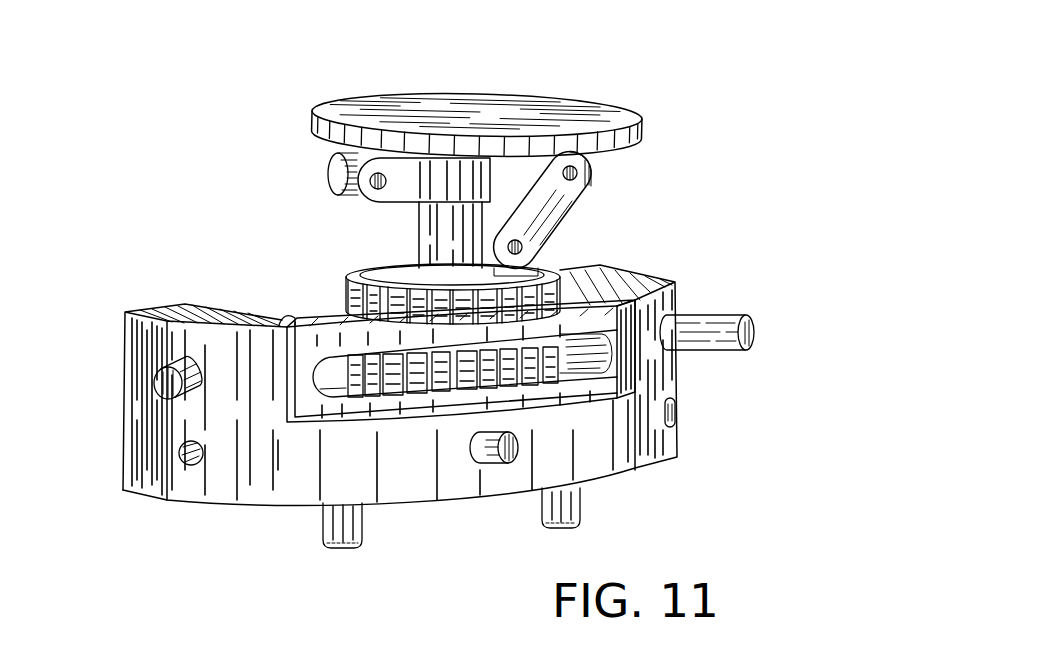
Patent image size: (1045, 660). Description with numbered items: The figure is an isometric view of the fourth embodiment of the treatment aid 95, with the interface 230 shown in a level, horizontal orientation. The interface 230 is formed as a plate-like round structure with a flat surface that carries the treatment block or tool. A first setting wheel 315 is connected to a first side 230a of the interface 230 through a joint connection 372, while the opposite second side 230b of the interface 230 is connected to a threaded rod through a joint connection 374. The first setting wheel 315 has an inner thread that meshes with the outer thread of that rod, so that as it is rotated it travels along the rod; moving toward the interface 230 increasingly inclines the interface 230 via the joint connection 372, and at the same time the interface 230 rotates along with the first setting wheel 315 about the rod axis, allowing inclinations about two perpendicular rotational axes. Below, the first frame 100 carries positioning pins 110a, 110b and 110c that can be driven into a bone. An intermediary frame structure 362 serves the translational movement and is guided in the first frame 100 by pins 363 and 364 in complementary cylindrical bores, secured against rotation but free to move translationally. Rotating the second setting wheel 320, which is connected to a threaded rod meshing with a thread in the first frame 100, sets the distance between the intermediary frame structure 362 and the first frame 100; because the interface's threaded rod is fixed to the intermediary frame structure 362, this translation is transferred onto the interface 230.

The treatment aid 95 is at (740, 90).
The first frame 100 is at (657, 367).
The positioning pin 110a is at (752, 332).
The positioning pin 110b is at (162, 384).
The positioning pin 110c is at (493, 455).
The interface 230 is at (593, 118).
The first side 230a is at (634, 167).
The second side 230b is at (308, 180).
The first setting wheel 315 is at (562, 290).
The second setting wheel 320 is at (533, 375).
The intermediary frame structure 362 is at (563, 322).
The pin 363 is at (333, 519).
The pin 364 is at (570, 507).
The joint connection 372 is at (543, 203).
The joint connection 374 is at (397, 203).